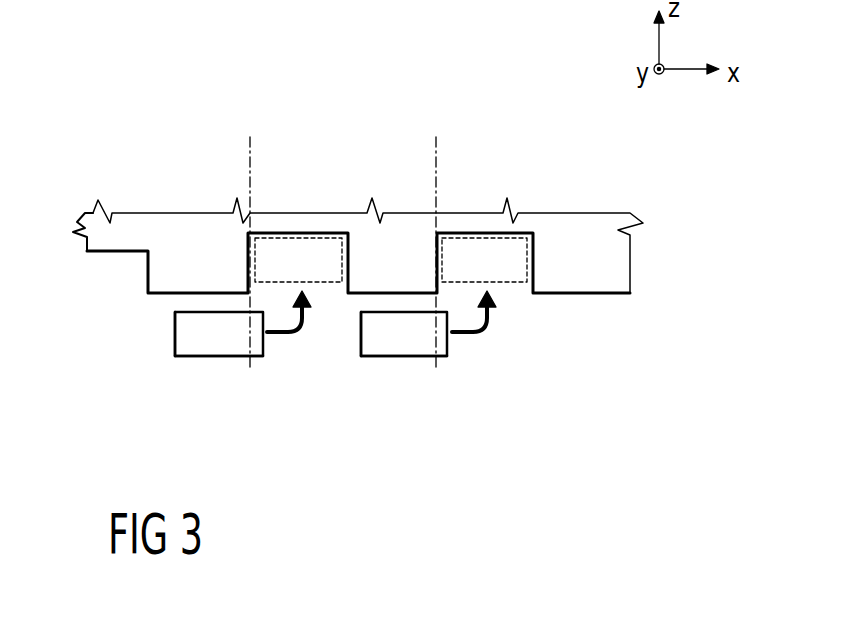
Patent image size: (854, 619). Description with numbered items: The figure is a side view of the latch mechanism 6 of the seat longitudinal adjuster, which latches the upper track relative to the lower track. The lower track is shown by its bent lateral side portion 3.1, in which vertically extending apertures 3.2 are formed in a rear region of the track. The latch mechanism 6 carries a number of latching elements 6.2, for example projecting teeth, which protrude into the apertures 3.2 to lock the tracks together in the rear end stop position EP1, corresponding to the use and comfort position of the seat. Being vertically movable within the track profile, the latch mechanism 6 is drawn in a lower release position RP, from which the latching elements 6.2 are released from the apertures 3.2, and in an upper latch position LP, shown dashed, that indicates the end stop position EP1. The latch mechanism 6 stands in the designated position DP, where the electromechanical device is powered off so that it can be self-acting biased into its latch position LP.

The lateral side portion 3.1 is at (145, 223).
The aperture 3.2 is at (267, 233).
The designated position DP is at (345, 235).
The rear end stop position EP1 is at (445, 176).
The latch position LP is at (331, 224).
The latch mechanism 6 is at (165, 340).
The latching element 6.2 is at (228, 347).
The release position RP is at (176, 366).